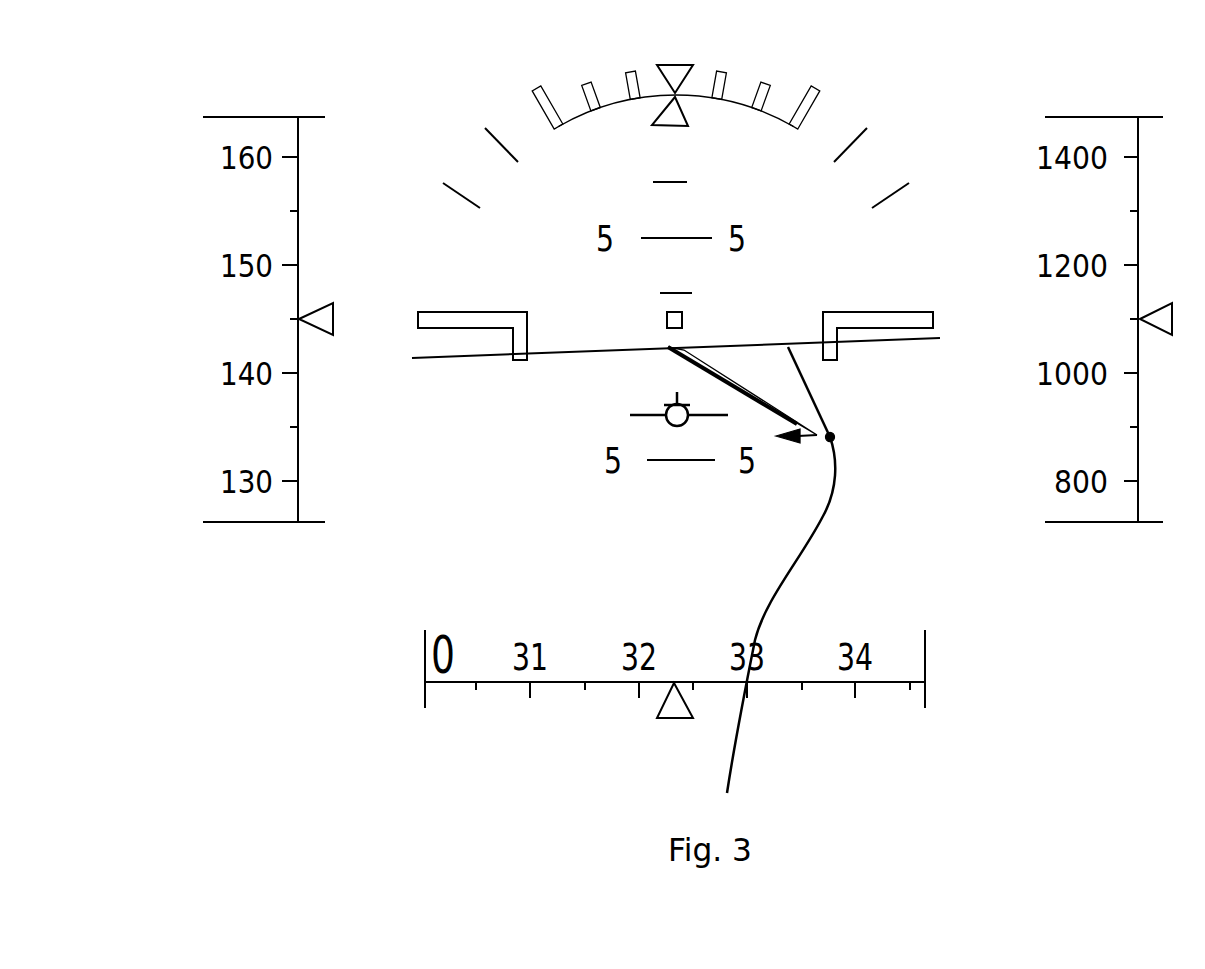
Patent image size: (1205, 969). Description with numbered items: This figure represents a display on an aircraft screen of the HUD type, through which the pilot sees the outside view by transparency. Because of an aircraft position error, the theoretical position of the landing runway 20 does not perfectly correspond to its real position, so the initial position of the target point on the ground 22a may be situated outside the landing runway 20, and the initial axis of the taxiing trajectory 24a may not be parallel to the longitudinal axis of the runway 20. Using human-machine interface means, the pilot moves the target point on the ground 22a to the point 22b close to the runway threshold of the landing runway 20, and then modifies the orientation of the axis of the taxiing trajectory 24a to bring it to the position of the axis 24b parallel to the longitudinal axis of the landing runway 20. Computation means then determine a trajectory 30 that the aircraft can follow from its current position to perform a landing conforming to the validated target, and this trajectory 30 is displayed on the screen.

The landing runway 20 is at (742, 412).
The target point on the ground 22a is at (834, 441).
The point close to the runway threshold 22b is at (785, 441).
The axis of the taxiing trajectory 24a is at (808, 392).
The axis parallel to the longitudinal axis of the landing runway 24b is at (695, 375).
The trajectory 30 is at (757, 612).